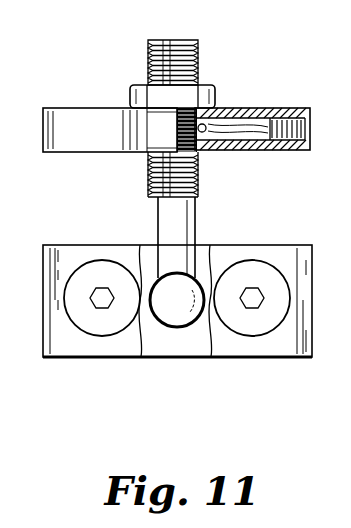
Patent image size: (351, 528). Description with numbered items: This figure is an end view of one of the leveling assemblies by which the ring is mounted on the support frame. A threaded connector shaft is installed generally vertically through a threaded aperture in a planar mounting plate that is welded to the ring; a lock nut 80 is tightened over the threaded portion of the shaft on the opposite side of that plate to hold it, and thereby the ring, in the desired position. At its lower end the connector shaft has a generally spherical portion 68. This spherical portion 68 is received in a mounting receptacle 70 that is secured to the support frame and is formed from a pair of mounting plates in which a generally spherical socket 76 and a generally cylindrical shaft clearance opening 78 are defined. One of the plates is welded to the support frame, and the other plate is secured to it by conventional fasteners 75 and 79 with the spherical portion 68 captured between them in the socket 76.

The spherical portion 68 is at (173, 303).
The mounting receptacle 70 is at (292, 245).
The fastener 75 is at (100, 325).
The spherical socket 76 is at (200, 273).
The shaft clearance opening 78 is at (158, 243).
The fastener 79 is at (265, 320).
The lock nut 80 is at (214, 100).